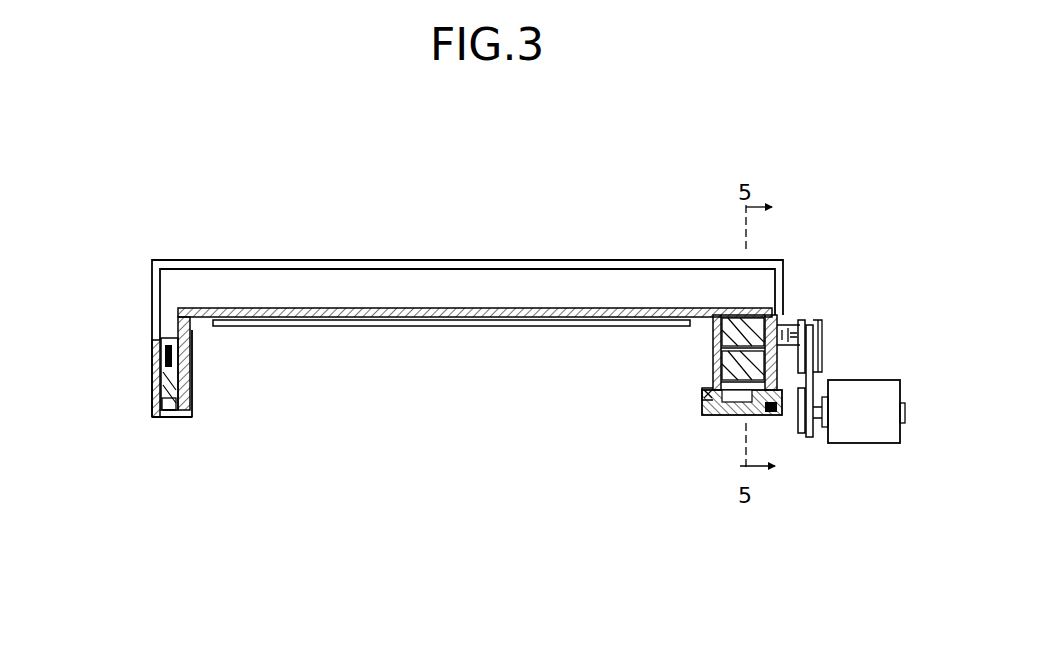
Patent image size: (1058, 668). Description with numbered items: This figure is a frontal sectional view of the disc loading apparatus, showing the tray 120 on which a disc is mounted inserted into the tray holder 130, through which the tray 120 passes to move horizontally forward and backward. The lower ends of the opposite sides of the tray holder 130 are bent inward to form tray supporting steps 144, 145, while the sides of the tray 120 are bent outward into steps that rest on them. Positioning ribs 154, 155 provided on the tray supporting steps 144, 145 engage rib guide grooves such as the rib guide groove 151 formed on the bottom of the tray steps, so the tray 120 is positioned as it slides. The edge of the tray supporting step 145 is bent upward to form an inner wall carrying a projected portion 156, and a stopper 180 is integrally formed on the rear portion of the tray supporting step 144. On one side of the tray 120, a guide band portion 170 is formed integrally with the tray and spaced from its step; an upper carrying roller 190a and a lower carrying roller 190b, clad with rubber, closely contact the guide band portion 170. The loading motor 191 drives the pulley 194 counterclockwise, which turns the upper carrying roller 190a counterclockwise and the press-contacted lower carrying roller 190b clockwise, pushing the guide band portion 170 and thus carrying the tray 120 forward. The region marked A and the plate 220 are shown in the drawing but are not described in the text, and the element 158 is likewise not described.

The tray holder 130 is at (254, 248).
The tray 120 is at (352, 330).
The plate 220 is at (458, 327).
The tray supporting step 144 is at (193, 403).
The stopper 180 is at (193, 357).
The support block 158 is at (172, 360).
The rib guide groove 151 is at (152, 402).
The positioning rib 154 is at (171, 415).
The guide band portion 170 is at (740, 317).
The upper carrying roller 190a is at (713, 332).
The lower carrying roller 190b is at (712, 375).
The projected portion 156 is at (707, 400).
The positioning rib 155 is at (733, 413).
The tray supporting step 145 is at (757, 416).
The detail region A is at (793, 318).
The pulley 194 is at (828, 340).
The loading motor 191 is at (883, 390).